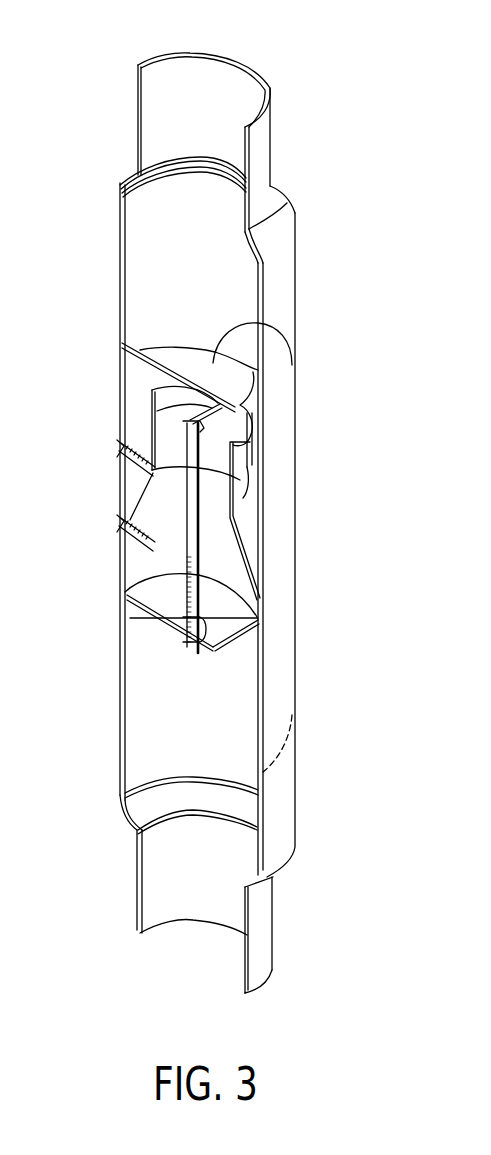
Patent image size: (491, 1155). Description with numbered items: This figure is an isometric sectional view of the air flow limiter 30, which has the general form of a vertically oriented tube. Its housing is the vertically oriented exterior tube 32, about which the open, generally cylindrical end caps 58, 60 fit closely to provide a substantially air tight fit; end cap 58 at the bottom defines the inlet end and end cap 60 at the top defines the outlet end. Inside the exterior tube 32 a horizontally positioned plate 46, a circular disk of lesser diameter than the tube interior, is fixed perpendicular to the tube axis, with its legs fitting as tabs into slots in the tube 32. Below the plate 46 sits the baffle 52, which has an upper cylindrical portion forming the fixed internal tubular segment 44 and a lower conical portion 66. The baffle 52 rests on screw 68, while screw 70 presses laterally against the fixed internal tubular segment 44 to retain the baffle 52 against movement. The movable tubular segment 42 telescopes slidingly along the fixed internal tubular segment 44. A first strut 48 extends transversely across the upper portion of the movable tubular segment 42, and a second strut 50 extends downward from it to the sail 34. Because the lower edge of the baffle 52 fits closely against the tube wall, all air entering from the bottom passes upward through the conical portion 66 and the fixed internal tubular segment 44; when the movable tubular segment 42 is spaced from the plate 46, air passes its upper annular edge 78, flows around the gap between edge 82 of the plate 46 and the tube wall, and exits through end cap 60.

The air flow limiter 30 is at (350, 82).
The vertically oriented exterior tube 32 is at (275, 678).
The sail 34 is at (160, 612).
The movable tubular segment 42 is at (165, 398).
The fixed internal tubular segment 44 is at (170, 425).
The horizontally positioned plate 46 is at (190, 367).
The first strut 48 is at (247, 413).
The second strut 50 is at (178, 572).
The baffle 52 is at (247, 519).
The end cap 58 is at (262, 922).
The end cap 60 is at (261, 157).
The lower conical portion 66 is at (251, 543).
The screw 68 is at (120, 520).
The screw 70 is at (120, 450).
The upper annular edge 78 is at (233, 440).
The edge 82 is at (217, 343).